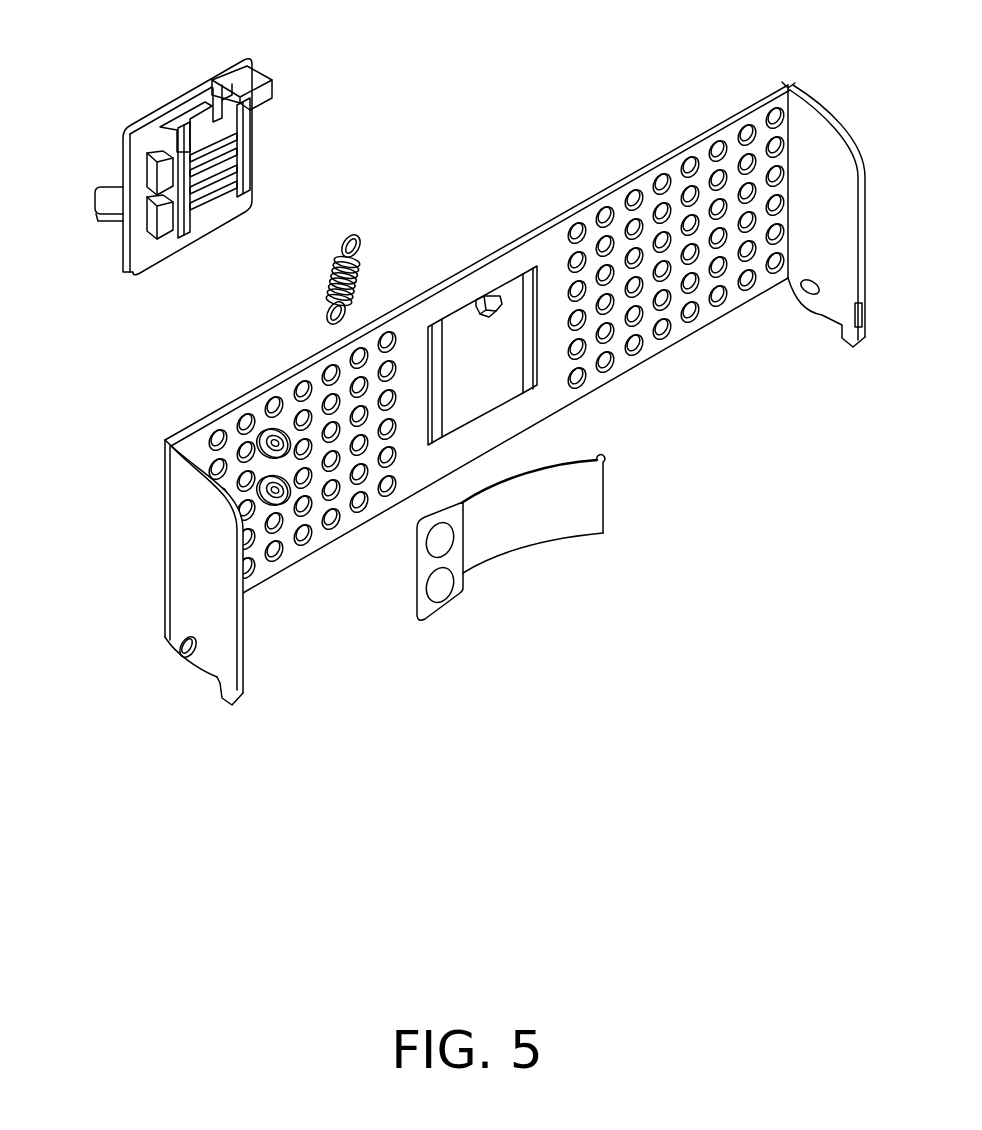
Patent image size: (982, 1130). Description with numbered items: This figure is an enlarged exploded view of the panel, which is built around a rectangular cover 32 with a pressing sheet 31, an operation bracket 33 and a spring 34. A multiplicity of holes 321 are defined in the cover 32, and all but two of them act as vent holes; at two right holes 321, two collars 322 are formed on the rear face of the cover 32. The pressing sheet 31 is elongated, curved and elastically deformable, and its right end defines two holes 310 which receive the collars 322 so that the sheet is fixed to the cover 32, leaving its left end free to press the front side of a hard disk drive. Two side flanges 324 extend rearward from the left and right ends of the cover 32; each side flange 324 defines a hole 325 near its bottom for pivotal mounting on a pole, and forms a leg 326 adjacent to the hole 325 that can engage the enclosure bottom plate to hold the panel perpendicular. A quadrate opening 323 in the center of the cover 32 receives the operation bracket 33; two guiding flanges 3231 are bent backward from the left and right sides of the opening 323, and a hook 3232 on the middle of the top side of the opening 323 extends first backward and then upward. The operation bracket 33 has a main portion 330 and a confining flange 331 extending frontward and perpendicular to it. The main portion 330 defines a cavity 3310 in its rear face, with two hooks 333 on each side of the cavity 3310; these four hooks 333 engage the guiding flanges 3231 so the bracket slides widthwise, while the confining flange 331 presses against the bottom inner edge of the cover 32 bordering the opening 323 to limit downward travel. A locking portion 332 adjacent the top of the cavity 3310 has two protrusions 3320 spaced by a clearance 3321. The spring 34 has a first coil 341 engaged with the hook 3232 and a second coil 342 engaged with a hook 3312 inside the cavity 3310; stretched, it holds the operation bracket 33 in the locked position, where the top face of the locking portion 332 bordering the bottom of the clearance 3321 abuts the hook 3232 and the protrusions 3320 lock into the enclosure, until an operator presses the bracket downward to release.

The pressing sheet 31 is at (515, 532).
The holes 310 is at (440, 590).
The cover 32 is at (148, 499).
The holes 321 is at (688, 167).
The collars 322 is at (273, 440).
The opening 323 is at (462, 332).
The guiding flanges 3231 is at (527, 365).
The hook 3232 is at (490, 293).
The side flanges 324 is at (187, 562).
The hole 325 is at (176, 650).
The leg 326 is at (233, 692).
The operation bracket 33 is at (162, 66).
The main portion 330 is at (148, 132).
The confining flange 331 is at (113, 197).
The locking portion 332 is at (370, 3).
The protrusions 3320 is at (262, 83).
The clearance 3321 is at (218, 90).
The cavity 3310 is at (233, 177).
The hook 3312 is at (185, 232).
The hooks 333 is at (165, 240).
The spring 34 is at (331, 239).
The first coil 341 is at (355, 233).
The second coil 342 is at (325, 317).